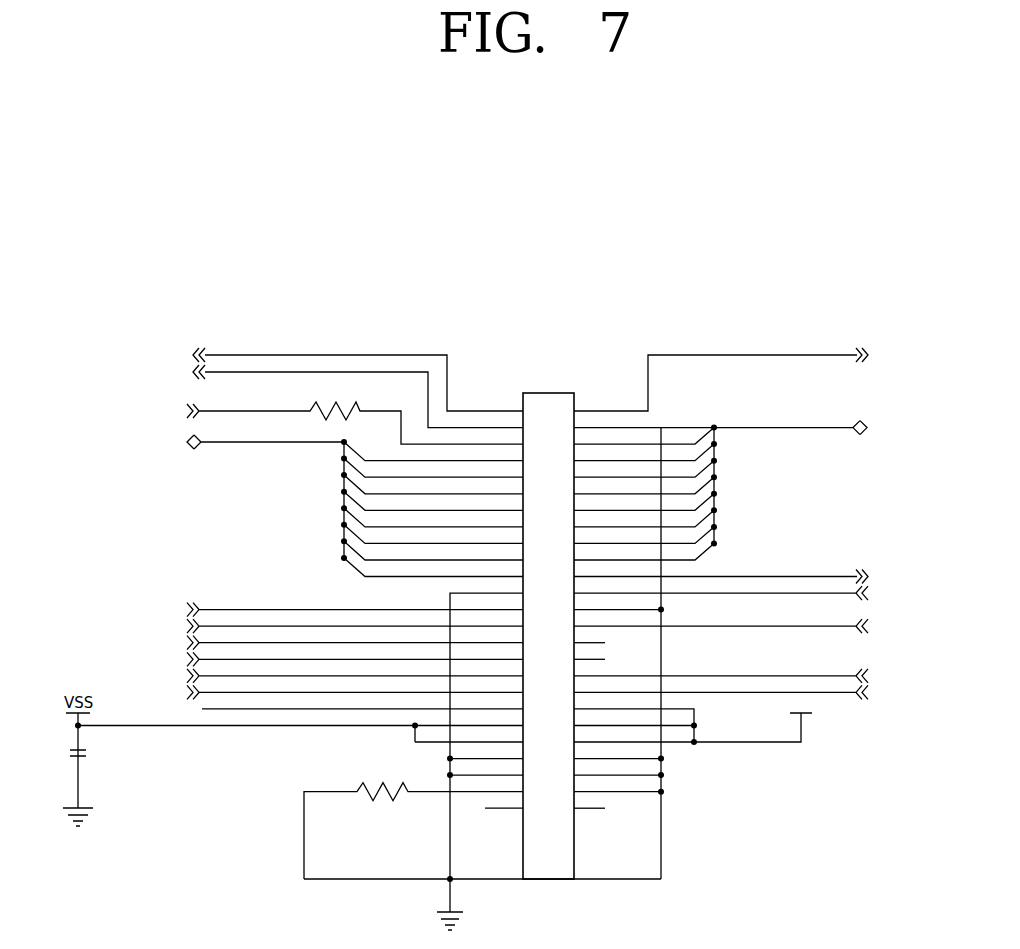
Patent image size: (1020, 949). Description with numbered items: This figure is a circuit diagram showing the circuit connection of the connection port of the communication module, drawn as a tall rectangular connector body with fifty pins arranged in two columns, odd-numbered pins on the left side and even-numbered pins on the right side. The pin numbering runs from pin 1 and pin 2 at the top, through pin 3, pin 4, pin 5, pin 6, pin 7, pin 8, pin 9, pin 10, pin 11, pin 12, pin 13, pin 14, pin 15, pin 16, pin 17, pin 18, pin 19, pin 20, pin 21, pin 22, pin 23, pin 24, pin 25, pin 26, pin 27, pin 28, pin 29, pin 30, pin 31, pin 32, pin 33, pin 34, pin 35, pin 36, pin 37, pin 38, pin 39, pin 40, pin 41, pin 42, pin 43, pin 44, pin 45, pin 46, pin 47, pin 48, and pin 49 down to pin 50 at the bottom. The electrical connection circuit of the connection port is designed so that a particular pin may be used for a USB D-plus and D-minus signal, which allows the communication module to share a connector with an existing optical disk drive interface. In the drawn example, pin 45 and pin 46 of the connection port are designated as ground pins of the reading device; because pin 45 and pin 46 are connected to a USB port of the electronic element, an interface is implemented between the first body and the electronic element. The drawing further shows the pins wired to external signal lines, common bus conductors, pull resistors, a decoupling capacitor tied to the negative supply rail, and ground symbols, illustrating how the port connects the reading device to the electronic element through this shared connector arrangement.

The pin 1 is at (358, 379).
The pin 2 is at (721, 379).
The pin 3 is at (358, 396).
The pin 4 is at (720, 424).
The pin 5 is at (355, 423).
The pin 6 is at (644, 436).
The pin 7 is at (433, 451).
The pin 8 is at (644, 452).
The pin 9 is at (433, 468).
The pin 10 is at (644, 469).
The pin 11 is at (433, 484).
The pin 12 is at (644, 485).
The pin 13 is at (433, 501).
The pin 14 is at (644, 502).
The pin 15 is at (433, 517).
The pin 16 is at (644, 518).
The pin 17 is at (433, 534).
The pin 18 is at (644, 535).
The pin 19 is at (433, 550).
The pin 20 is at (644, 551).
The pin 21 is at (433, 567).
The pin 22 is at (721, 573).
The pin 23 is at (486, 729).
The pin 24 is at (721, 589).
The pin 25 is at (355, 606).
The pin 26 is at (617, 603).
The pin 27 is at (355, 622).
The pin 28 is at (721, 622).
The pin 29 is at (355, 639).
The pin 30 is at (589, 636).
The pin 31 is at (355, 655).
The pin 32 is at (589, 652).
The pin 33 is at (355, 672).
The pin 34 is at (721, 672).
The pin 35 is at (355, 688).
The pin 36 is at (721, 688).
The pin 37 is at (362, 702).
The pin 38 is at (634, 718).
The pin 39 is at (300, 727).
The pin 40 is at (634, 719).
The pin 41 is at (469, 735).
The pin 42 is at (693, 727).
The pin 43 is at (486, 752).
The pin 44 is at (617, 752).
The ground pin 45 is at (486, 768).
The ground pin 46 is at (617, 768).
The pin 47 is at (413, 828).
The pin 48 is at (617, 785).
The pin 49 is at (504, 801).
The pin 50 is at (589, 801).